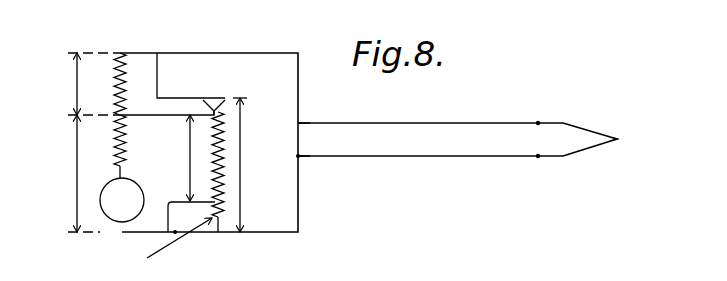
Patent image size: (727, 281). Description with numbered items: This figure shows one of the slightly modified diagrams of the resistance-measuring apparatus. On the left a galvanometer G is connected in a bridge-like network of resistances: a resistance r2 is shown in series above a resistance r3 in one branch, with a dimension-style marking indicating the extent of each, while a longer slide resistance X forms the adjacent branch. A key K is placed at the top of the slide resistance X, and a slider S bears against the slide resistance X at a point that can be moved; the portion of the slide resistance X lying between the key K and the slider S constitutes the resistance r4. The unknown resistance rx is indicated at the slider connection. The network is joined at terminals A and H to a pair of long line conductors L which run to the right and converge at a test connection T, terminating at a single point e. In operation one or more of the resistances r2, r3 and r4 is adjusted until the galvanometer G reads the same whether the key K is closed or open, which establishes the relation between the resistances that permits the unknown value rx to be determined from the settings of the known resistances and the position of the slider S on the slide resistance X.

The resistance r2 is at (97, 84).
The resistance r3 is at (97, 173).
The resistance r4 is at (188, 158).
The unknown resistance rx is at (168, 240).
The key K is at (214, 97).
The slide resistance X is at (231, 165).
The galvanometer G is at (122, 200).
The slider S is at (213, 239).
The terminal A is at (291, 124).
The terminal H is at (291, 157).
The line conductors L is at (417, 140).
The test lead T is at (576, 139).
The point e is at (621, 138).